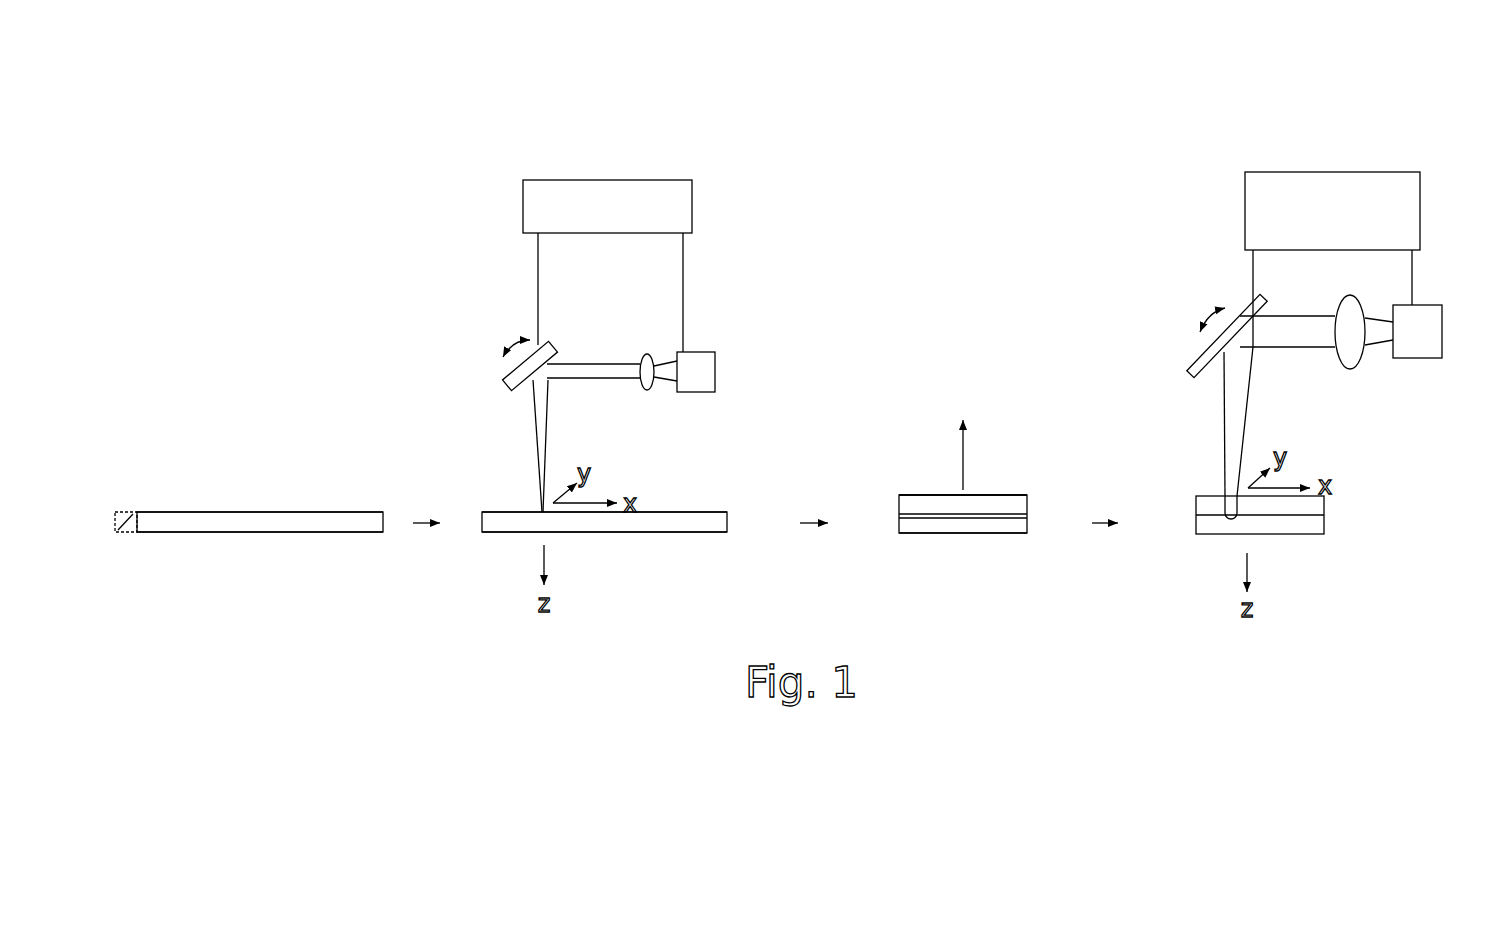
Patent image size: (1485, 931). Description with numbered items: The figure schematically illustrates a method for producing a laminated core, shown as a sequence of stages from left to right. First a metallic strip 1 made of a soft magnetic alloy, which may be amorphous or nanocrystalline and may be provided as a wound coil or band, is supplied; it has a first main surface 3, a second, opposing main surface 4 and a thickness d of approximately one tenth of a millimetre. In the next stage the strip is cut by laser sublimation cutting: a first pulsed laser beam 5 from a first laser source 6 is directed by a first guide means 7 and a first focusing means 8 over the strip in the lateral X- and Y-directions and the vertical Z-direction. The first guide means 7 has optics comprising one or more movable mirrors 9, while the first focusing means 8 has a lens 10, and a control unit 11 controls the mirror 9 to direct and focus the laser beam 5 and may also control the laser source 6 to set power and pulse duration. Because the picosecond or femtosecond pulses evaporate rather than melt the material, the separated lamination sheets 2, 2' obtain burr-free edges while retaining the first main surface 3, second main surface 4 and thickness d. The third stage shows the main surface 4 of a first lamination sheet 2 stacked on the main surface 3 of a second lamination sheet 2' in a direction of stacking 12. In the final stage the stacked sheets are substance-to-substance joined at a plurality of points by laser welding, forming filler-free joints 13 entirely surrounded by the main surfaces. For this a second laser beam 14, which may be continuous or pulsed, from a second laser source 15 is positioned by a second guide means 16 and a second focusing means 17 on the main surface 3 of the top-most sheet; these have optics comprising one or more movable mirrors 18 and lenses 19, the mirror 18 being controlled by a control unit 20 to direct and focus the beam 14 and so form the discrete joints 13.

The metallic strip 1 is at (185, 526).
The thickness d is at (118, 518).
The lamination sheet 2 is at (986, 502).
The lamination sheet 2' is at (991, 532).
The first main surface 3 is at (300, 515).
The second main surface 4 is at (311, 535).
The laser beam 5 is at (513, 413).
The first laser source 6 is at (700, 365).
The first guide means 7 is at (506, 333).
The first focusing means 8 is at (645, 352).
The movable mirror 9 is at (545, 362).
The lens 10 is at (650, 391).
The control unit 11 is at (632, 206).
The direction of stacking 12 is at (961, 450).
The filler-free joint 13 is at (1222, 496).
The second laser beam 14 is at (1212, 397).
The second laser source 15 is at (1416, 350).
The second guide means 16 is at (1207, 299).
The second focusing means 17 is at (1368, 293).
The movable mirror 18 is at (1200, 362).
The lens 19 is at (1350, 371).
The control unit 20 is at (1327, 192).